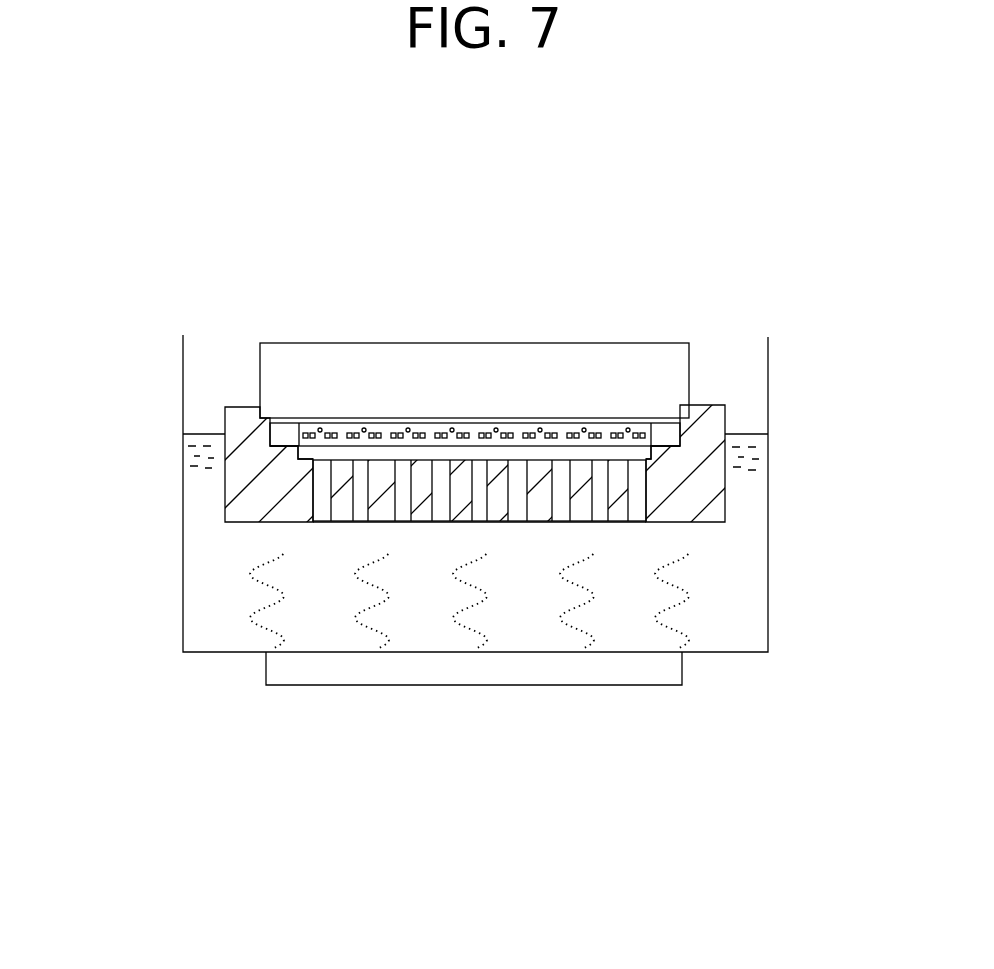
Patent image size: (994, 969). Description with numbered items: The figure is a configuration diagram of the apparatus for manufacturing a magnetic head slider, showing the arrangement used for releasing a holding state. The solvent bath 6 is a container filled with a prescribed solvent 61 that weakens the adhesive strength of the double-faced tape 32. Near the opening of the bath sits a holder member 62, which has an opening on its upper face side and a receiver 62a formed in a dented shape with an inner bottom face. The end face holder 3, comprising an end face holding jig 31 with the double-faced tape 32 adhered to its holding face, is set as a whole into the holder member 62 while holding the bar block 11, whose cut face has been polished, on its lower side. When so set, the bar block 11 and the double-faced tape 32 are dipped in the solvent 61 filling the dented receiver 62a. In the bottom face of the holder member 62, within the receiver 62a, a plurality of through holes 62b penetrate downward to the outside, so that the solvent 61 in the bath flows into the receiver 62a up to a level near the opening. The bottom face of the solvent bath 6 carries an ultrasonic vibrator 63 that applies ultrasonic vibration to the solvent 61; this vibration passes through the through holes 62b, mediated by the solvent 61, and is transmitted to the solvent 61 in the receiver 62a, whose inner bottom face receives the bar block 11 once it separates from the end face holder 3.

The end face holder 3 is at (660, 315).
The solvent bath 6 is at (183, 603).
The bar block 11 is at (650, 463).
The end face holding jig 31 is at (689, 359).
The double-faced tape 32 is at (672, 441).
The solvent 61 is at (196, 432).
The holder member 62 is at (236, 403).
The receiver 62a is at (282, 458).
The through holes 62b is at (639, 505).
The ultrasonic vibrator 63 is at (555, 686).